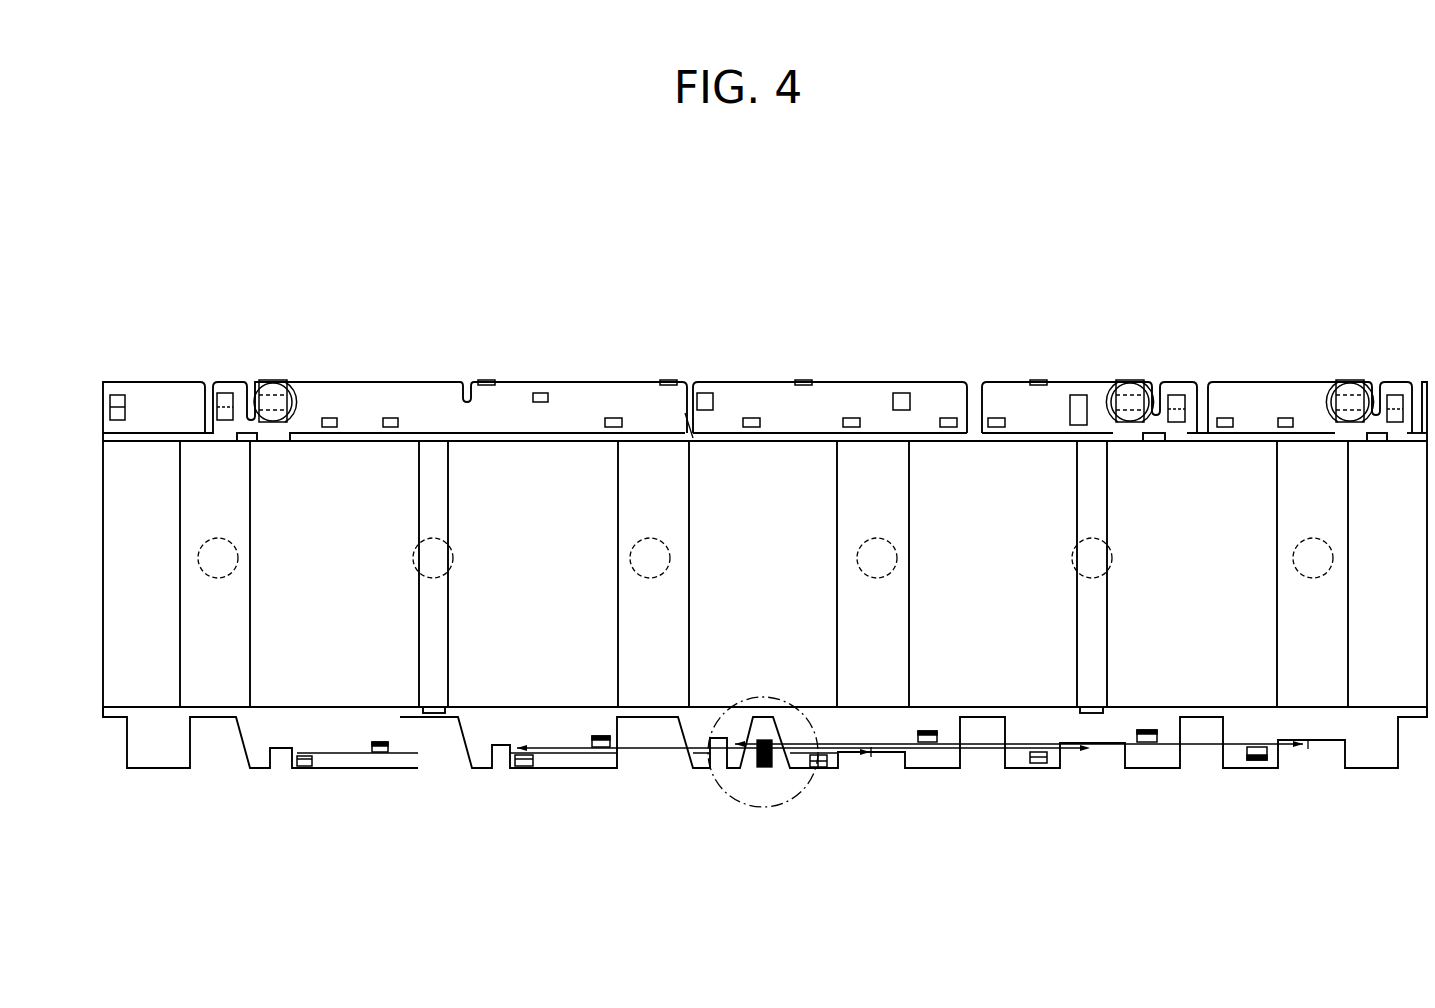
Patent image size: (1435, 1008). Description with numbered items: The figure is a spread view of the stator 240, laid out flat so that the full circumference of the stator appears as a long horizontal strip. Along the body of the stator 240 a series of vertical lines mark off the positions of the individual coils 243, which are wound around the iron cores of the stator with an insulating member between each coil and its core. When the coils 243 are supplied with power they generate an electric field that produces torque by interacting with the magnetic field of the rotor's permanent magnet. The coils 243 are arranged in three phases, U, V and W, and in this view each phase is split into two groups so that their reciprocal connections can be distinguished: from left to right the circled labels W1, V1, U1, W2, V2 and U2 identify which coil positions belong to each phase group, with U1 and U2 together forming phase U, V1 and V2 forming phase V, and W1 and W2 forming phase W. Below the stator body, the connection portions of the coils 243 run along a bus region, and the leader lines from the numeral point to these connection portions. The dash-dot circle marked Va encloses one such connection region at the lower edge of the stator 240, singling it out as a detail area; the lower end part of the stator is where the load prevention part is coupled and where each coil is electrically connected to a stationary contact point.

The stator 240 is at (138, 294).
The coils 243 is at (855, 757).
The enlarged region Va is at (772, 808).
The W-phase coil W1 is at (218, 558).
The V-phase coil V1 is at (433, 558).
The U-phase coil U1 is at (650, 558).
The W-phase coil W2 is at (877, 558).
The V-phase coil V2 is at (1092, 558).
The U-phase coil U2 is at (1313, 558).